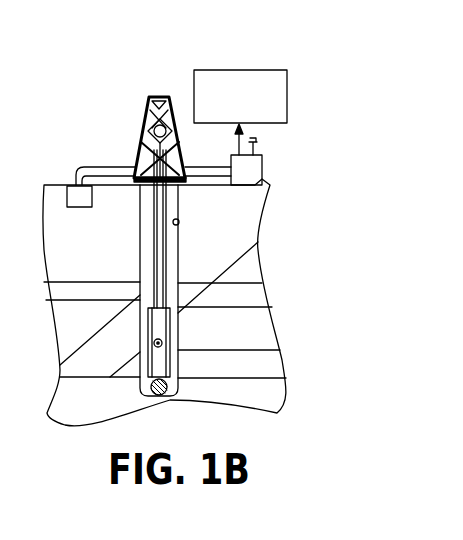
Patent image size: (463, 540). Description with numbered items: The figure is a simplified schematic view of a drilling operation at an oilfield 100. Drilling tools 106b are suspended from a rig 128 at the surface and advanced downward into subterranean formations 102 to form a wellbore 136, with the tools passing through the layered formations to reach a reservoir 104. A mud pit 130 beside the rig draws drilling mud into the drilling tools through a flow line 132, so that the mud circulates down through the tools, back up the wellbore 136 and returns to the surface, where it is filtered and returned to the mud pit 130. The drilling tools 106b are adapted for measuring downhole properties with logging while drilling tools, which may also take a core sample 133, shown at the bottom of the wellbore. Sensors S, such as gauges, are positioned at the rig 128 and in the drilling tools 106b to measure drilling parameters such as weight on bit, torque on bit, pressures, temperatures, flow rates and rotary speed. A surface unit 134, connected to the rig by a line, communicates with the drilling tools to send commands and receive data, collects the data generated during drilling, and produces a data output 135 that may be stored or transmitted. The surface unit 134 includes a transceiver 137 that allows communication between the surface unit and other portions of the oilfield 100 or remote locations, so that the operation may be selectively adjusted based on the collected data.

The oilfield 100 is at (92, 104).
The subterranean formations 102 is at (186, 284).
The reservoir 104 is at (250, 343).
The drilling tools 106b is at (148, 337).
The rig 128 is at (142, 137).
The mud pit 130 is at (78, 208).
The flow line 132 is at (74, 182).
The core sample 133 is at (150, 391).
The surface unit 134 is at (262, 170).
The data output 135 is at (240, 69).
The wellbore 136 is at (180, 222).
The transceiver 137 is at (258, 145).
The sensors S is at (149, 113).